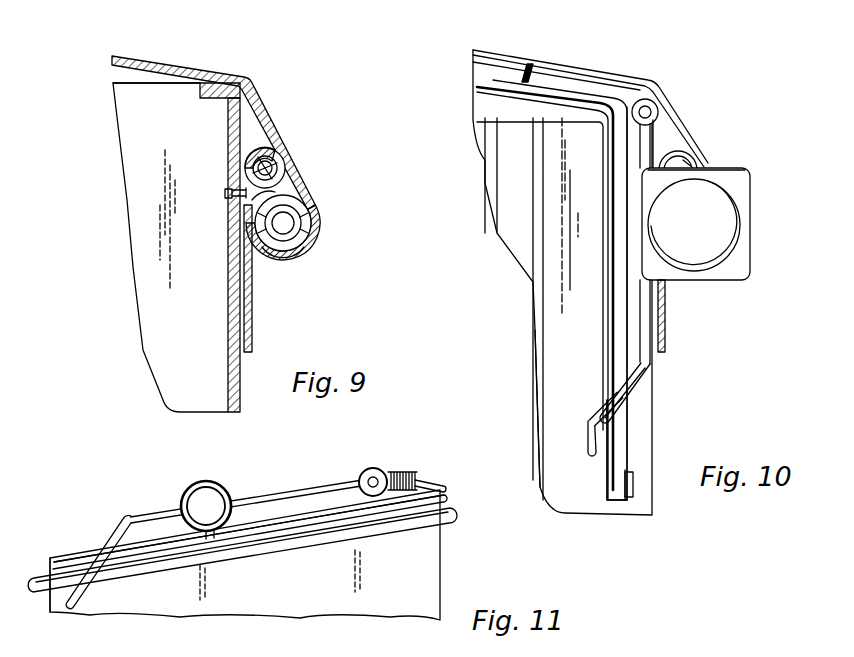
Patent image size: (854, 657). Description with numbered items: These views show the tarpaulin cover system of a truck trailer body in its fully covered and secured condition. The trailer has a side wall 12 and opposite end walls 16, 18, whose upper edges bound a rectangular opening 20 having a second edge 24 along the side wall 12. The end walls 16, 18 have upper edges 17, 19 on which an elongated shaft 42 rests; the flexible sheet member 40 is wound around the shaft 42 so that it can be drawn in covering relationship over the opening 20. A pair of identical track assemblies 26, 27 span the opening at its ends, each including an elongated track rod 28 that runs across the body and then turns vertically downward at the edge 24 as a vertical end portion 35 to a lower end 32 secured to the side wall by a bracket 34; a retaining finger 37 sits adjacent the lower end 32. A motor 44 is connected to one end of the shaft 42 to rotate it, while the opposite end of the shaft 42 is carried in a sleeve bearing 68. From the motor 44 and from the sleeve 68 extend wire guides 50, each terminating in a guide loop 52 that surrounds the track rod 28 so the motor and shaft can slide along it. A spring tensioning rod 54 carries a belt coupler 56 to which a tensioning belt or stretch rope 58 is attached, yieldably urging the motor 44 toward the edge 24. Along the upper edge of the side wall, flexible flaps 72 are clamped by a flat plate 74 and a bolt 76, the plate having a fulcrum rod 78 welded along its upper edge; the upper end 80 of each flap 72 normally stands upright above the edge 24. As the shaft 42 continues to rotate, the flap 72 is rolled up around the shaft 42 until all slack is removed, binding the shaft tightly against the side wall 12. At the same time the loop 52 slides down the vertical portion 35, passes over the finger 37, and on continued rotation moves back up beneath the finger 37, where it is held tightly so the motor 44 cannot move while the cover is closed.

In FIG. 9, the side wall 12 is at (241, 364).
In FIG. 10, the side wall 12 is at (653, 412).
In FIG. 10, the end wall 16 is at (547, 375).
In FIG. 10, the upper edge 17 is at (510, 58).
In FIG. 11, the end wall 18 is at (420, 612).
In FIG. 11, the upper edge 19 is at (68, 556).
In FIG. 9, the rectangular opening 20 is at (146, 84).
In FIG. 9, the second edge 24 is at (200, 84).
In FIG. 10, the track assembly 26 is at (529, 62).
In FIG. 11, the track assembly 27 is at (450, 515).
In FIG. 10, the track rod 28 is at (557, 63).
In FIG. 11, the track rod 28 is at (440, 530).
In FIG. 10, the lower end 32 is at (613, 495).
In FIG. 10, the bracket 34 is at (633, 488).
In FIG. 10, the vertical end portion 35 is at (612, 385).
In FIG. 10, the retaining finger 37 is at (585, 433).
In FIG. 9, the sheet member 40 is at (203, 70).
In FIG. 10, the sheet member 40 is at (570, 58).
In FIG. 11, the sheet member 40 is at (317, 510).
In FIG. 9, the shaft 42 is at (322, 213).
In FIG. 11, the shaft 42 is at (204, 497).
In FIG. 10, the motor 44 is at (750, 192).
In FIG. 10, the wire guide 50 is at (644, 352).
In FIG. 11, the wire guide 50 is at (143, 508).
In FIG. 10, the guide loop 52 is at (628, 393).
In FIG. 11, the guide loop 52 is at (110, 552).
In FIG. 10, the spring tensioning rod 54 is at (662, 110).
In FIG. 11, the spring tensioning rod 54 is at (413, 473).
In FIG. 10, the belt coupler 56 is at (657, 99).
In FIG. 11, the belt coupler 56 is at (370, 468).
In FIG. 11, the tensioning belt 58 is at (435, 487).
In FIG. 11, the sleeve bearing 68 is at (233, 497).
In FIG. 9, the flexible flap 72 is at (317, 198).
In FIG. 10, the flexible flap 72 is at (690, 142).
In FIG. 9, the flat plate 74 is at (254, 344).
In FIG. 10, the flat plate 74 is at (665, 332).
In FIG. 9, the bolt 76 is at (224, 193).
In FIG. 9, the fulcrum rod 78 is at (252, 169).
In FIG. 10, the fulcrum rod 78 is at (720, 172).
In FIG. 9, the upper end 80 is at (282, 260).